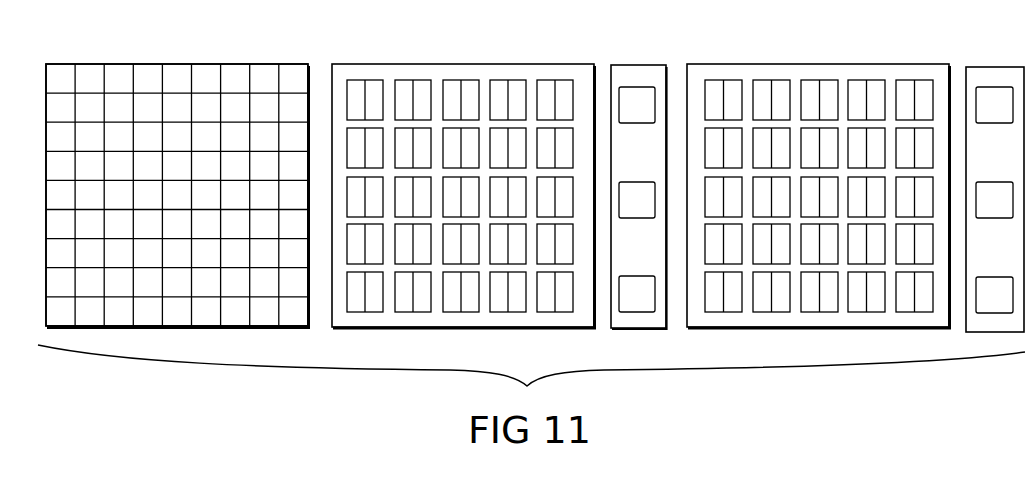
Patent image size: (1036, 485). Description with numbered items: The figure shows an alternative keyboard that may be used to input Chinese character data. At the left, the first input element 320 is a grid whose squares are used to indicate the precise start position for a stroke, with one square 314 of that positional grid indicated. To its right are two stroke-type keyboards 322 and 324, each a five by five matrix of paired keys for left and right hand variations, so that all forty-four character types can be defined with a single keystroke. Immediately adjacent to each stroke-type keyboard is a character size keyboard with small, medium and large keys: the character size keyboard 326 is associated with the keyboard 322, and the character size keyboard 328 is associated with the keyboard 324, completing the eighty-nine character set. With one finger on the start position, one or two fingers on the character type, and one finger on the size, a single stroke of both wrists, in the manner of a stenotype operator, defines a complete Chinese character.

The blank grid display area 314 is at (62, 75).
The first input element 320 is at (213, 50).
The stroke-type keyboard 322 is at (480, 50).
The stroke-type keyboard 324 is at (848, 50).
The character size keyboard 326 is at (632, 50).
The character size keyboard 328 is at (1004, 52).